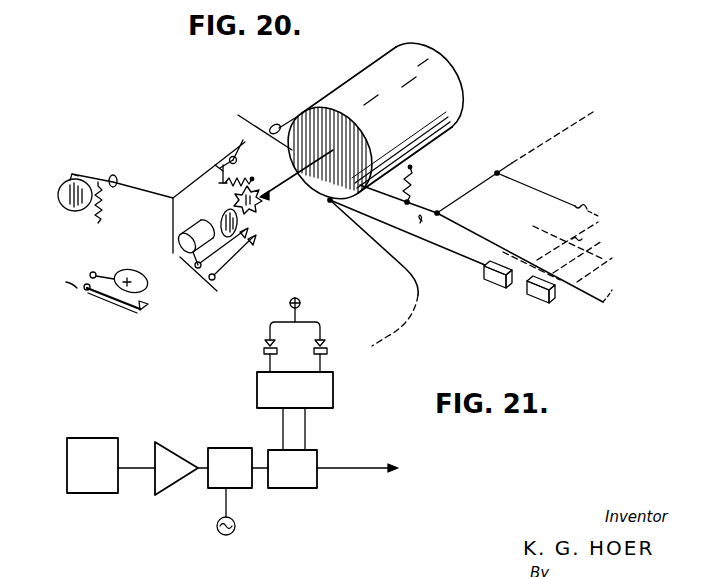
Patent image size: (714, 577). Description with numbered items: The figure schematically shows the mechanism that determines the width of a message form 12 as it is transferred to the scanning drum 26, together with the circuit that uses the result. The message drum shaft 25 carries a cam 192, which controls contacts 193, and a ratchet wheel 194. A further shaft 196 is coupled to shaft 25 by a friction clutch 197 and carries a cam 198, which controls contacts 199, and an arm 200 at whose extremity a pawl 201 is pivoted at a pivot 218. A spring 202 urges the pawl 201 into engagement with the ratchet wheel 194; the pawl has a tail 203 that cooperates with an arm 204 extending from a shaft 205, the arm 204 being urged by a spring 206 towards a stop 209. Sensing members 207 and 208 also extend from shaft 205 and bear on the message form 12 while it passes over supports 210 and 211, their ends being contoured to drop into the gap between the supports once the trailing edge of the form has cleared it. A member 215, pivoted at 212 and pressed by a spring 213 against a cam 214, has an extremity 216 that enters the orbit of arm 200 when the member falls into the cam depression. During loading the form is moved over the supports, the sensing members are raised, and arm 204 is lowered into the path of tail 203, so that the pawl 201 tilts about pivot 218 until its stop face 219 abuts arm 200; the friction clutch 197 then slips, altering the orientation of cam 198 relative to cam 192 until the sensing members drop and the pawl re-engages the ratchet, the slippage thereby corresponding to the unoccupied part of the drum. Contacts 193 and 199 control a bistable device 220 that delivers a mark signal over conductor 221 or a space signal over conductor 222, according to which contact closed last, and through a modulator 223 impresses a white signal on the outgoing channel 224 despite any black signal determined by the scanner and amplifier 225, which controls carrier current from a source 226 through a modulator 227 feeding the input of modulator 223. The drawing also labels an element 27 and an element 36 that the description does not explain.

In FIG. 20, the message form 12 is at (600, 291).
In FIG. 20, the message drum shaft 25 is at (296, 181).
In FIG. 20, the scanning drum 26 is at (402, 75).
In FIG. 20, the reflected light path 27 is at (370, 237).
In FIG. 21, the signal source 36 is at (80, 478).
In FIG. 20, the cam 192 is at (262, 222).
In FIG. 20, the contacts 193 is at (255, 240).
In FIG. 21, the contacts 193 is at (255, 354).
In FIG. 20, the ratchet wheel 194 is at (328, 202).
In FIG. 20, the further shaft 196 is at (150, 263).
In FIG. 20, the friction clutch 197 is at (219, 271).
In FIG. 20, the cam 198 is at (108, 273).
In FIG. 20, the contacts 199 is at (141, 313).
In FIG. 21, the contacts 199 is at (343, 355).
In FIG. 20, the arm 200 is at (173, 222).
In FIG. 20, the pawl 201 is at (255, 171).
In FIG. 20, the spring 202 is at (230, 212).
In FIG. 20, the tail 203 is at (243, 140).
In FIG. 20, the arm 204 is at (257, 126).
In FIG. 20, the shaft 205 is at (505, 168).
In FIG. 20, the spring 206 is at (415, 181).
In FIG. 20, the sensing member 207 is at (486, 242).
In FIG. 20, the sensing member 208 is at (542, 192).
In FIG. 20, the stop 209 is at (276, 125).
In FIG. 20, the support 210 is at (492, 287).
In FIG. 20, the support 211 is at (543, 302).
In FIG. 20, the pivot 212 is at (113, 175).
In FIG. 20, the spring 213 is at (103, 200).
In FIG. 20, the cam 214 is at (70, 197).
In FIG. 20, the member 215 is at (88, 175).
In FIG. 20, the extremity 216 is at (220, 168).
In FIG. 20, the pivot 218 is at (230, 159).
In FIG. 20, the stop face 219 is at (215, 165).
In FIG. 21, the bistable device 220 is at (333, 390).
In FIG. 21, the conductor 221 is at (283, 434).
In FIG. 21, the conductor 222 is at (305, 436).
In FIG. 21, the modulator 223 is at (303, 489).
In FIG. 21, the outgoing channel 224 is at (352, 471).
In FIG. 21, the scanner and amplifier 225 is at (160, 480).
In FIG. 21, the source 226 is at (236, 526).
In FIG. 21, the modulator 227 is at (230, 449).